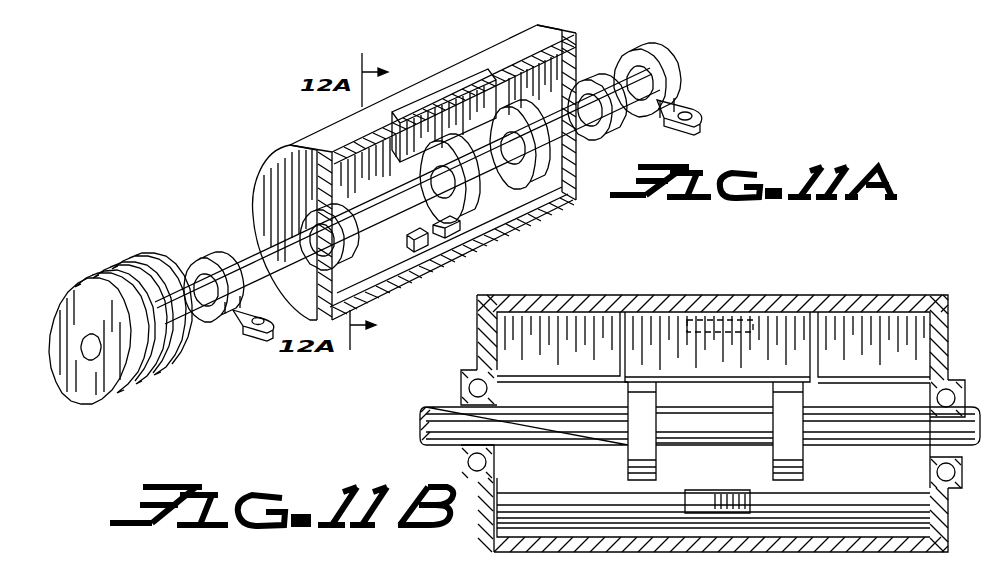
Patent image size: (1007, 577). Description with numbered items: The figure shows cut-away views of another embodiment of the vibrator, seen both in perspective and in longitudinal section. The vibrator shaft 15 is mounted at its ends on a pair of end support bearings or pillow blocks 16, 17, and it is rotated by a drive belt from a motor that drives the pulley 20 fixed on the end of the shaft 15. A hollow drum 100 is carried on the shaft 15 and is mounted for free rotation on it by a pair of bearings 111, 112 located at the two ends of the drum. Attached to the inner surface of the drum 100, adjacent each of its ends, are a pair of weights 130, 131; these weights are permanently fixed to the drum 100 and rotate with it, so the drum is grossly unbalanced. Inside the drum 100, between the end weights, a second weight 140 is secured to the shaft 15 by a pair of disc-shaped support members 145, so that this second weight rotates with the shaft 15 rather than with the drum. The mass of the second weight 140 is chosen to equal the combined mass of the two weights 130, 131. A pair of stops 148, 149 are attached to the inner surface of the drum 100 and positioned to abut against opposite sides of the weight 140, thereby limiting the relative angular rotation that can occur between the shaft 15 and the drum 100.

In FIG. 11A, the hollow drum 100 is at (270, 158).
In FIG. 11A, the weight 130 is at (380, 140).
In FIG. 11B, the weight 130 is at (570, 322).
In FIG. 11A, the second weight 140 is at (463, 118).
In FIG. 11B, the second weight 140 is at (658, 322).
In FIG. 11A, the weight 131 is at (565, 60).
In FIG. 11B, the weight 131 is at (875, 318).
In FIG. 11A, the end support bearing or pillow block 17 is at (666, 54).
In FIG. 11A, the bearing 112 is at (604, 130).
In FIG. 11B, the bearing 112 is at (932, 468).
In FIG. 11A, the disc-shaped support members 145 is at (466, 178).
In FIG. 11B, the disc-shaped support members 145 is at (773, 458).
In FIG. 11A, the bearing 111 is at (337, 264).
In FIG. 11B, the bearing 111 is at (462, 467).
In FIG. 11A, the end support bearing or pillow block 16 is at (213, 257).
In FIG. 11A, the vibrator shaft 15 is at (247, 262).
In FIG. 11B, the vibrator shaft 15 is at (557, 445).
In FIG. 11A, the pulley 20 is at (118, 263).
In FIG. 11B, the stop 149 is at (729, 320).
In FIG. 11B, the stop 148 is at (687, 498).